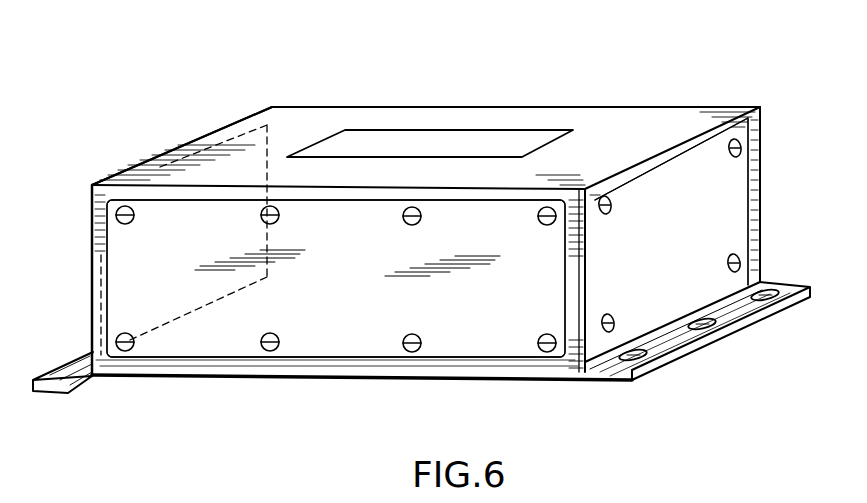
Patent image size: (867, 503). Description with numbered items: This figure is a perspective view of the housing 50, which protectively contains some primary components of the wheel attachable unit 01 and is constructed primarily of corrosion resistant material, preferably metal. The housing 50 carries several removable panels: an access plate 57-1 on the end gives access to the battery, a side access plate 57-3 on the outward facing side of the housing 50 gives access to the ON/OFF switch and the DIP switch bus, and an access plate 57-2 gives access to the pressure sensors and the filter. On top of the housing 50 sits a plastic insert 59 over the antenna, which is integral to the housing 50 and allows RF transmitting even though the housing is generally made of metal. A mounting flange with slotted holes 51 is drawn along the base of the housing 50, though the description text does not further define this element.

The housing 50 is at (93, 225).
The mounting flange slots 51 is at (767, 300).
The access plate 57-1 is at (697, 213).
The access plate 57-2 is at (200, 153).
The side access plate 57-3 is at (243, 320).
The plastic insert 59 is at (487, 135).
The wheel attachable unit 01 is at (395, 105).